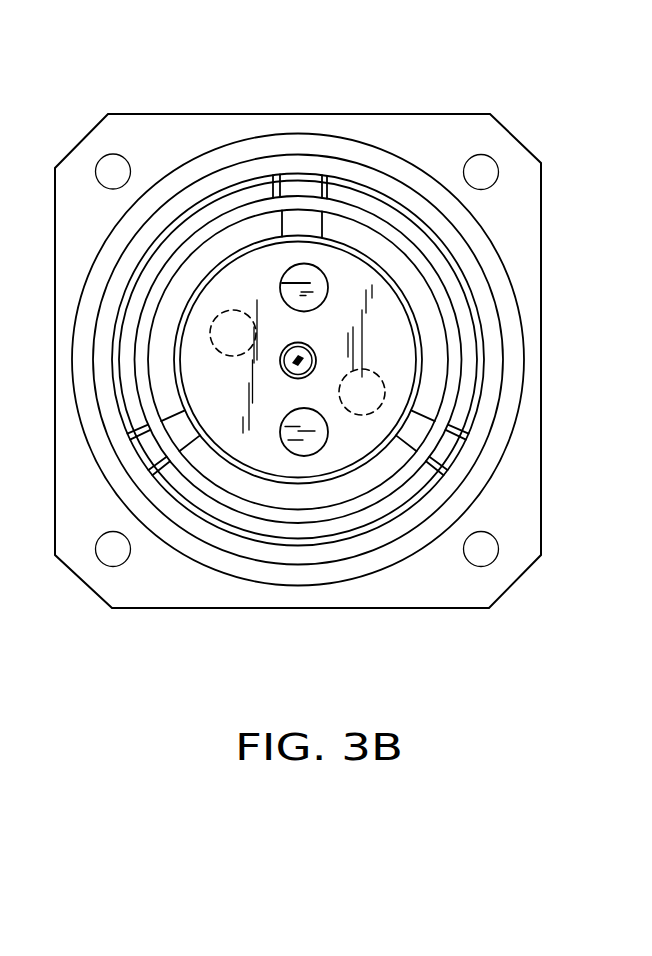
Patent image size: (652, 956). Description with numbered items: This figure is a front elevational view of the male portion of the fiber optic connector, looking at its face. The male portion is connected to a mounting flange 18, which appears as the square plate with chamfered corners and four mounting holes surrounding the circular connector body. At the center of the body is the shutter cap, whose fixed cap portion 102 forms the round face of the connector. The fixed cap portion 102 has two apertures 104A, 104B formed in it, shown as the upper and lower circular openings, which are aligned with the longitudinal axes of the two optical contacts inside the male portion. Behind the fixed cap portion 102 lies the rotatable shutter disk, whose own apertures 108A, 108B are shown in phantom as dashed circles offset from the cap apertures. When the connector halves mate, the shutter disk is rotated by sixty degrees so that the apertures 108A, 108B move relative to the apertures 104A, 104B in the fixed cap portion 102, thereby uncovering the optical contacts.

The mounting flange 18 is at (479, 133).
The fixed cap portion 102 is at (392, 318).
The aperture 104A is at (308, 278).
The aperture 104B is at (318, 438).
The aperture 108A is at (232, 318).
The aperture 108B is at (372, 391).